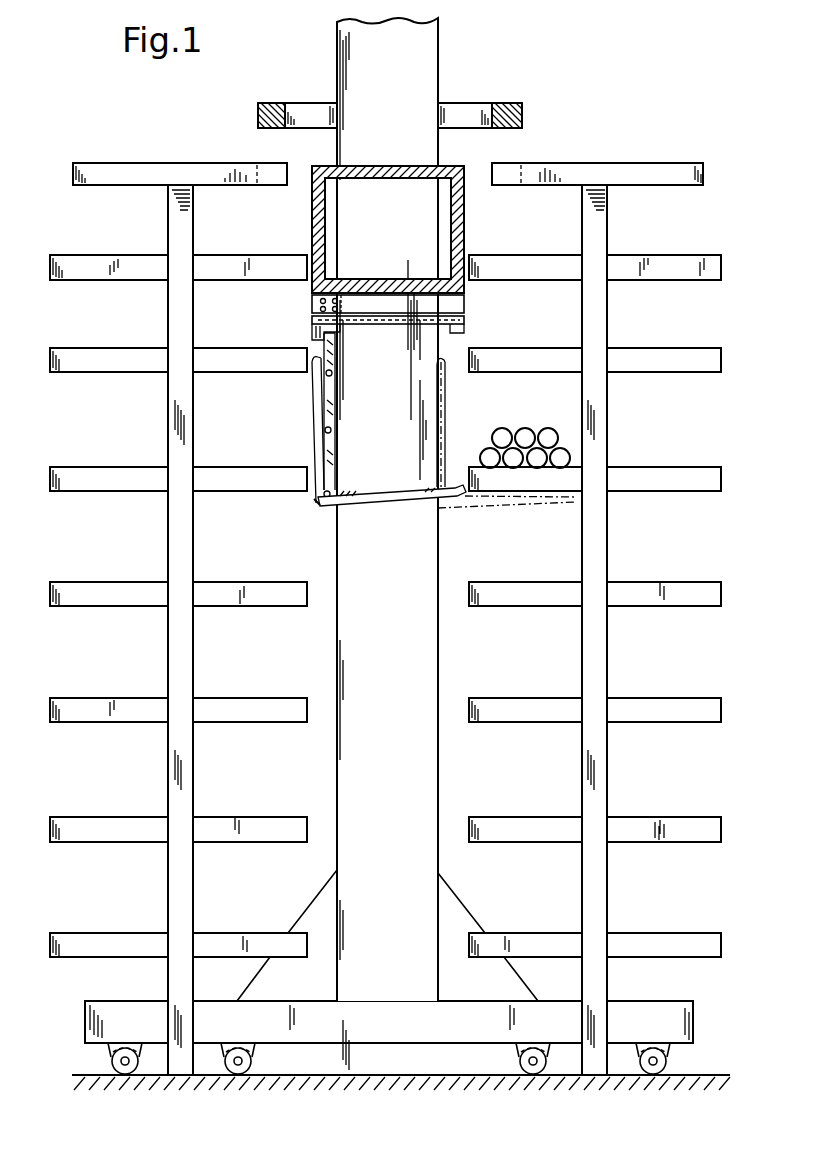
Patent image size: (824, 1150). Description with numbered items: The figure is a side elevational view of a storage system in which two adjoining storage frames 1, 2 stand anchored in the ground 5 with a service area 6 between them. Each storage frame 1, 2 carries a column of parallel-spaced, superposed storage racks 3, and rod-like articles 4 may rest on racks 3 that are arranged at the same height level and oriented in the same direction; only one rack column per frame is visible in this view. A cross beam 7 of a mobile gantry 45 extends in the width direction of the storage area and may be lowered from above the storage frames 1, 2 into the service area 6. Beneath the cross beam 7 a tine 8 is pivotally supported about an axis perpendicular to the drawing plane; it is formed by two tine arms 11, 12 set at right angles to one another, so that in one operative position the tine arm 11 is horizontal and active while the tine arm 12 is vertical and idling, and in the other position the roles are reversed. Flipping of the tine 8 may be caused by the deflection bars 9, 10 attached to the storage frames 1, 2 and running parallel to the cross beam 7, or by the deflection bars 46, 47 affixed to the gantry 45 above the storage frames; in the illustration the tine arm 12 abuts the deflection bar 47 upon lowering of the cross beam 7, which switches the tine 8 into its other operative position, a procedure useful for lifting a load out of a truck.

The storage frame 1 is at (131, 158).
The storage frame 2 is at (676, 160).
The storage racks 3 is at (112, 264).
The rod-like articles 4 is at (525, 438).
The ground 5 is at (700, 1075).
The service area 6 is at (434, 544).
The cross beam 7 is at (394, 166).
The tine 8 is at (316, 507).
The deflection bar 9 is at (271, 170).
The deflection bar 10 is at (510, 167).
The tine arm 11 is at (312, 420).
The tine arm 12 is at (387, 498).
The mobile gantry 45 is at (403, 838).
The deflection bar 46 is at (268, 104).
The deflection bar 47 is at (508, 104).